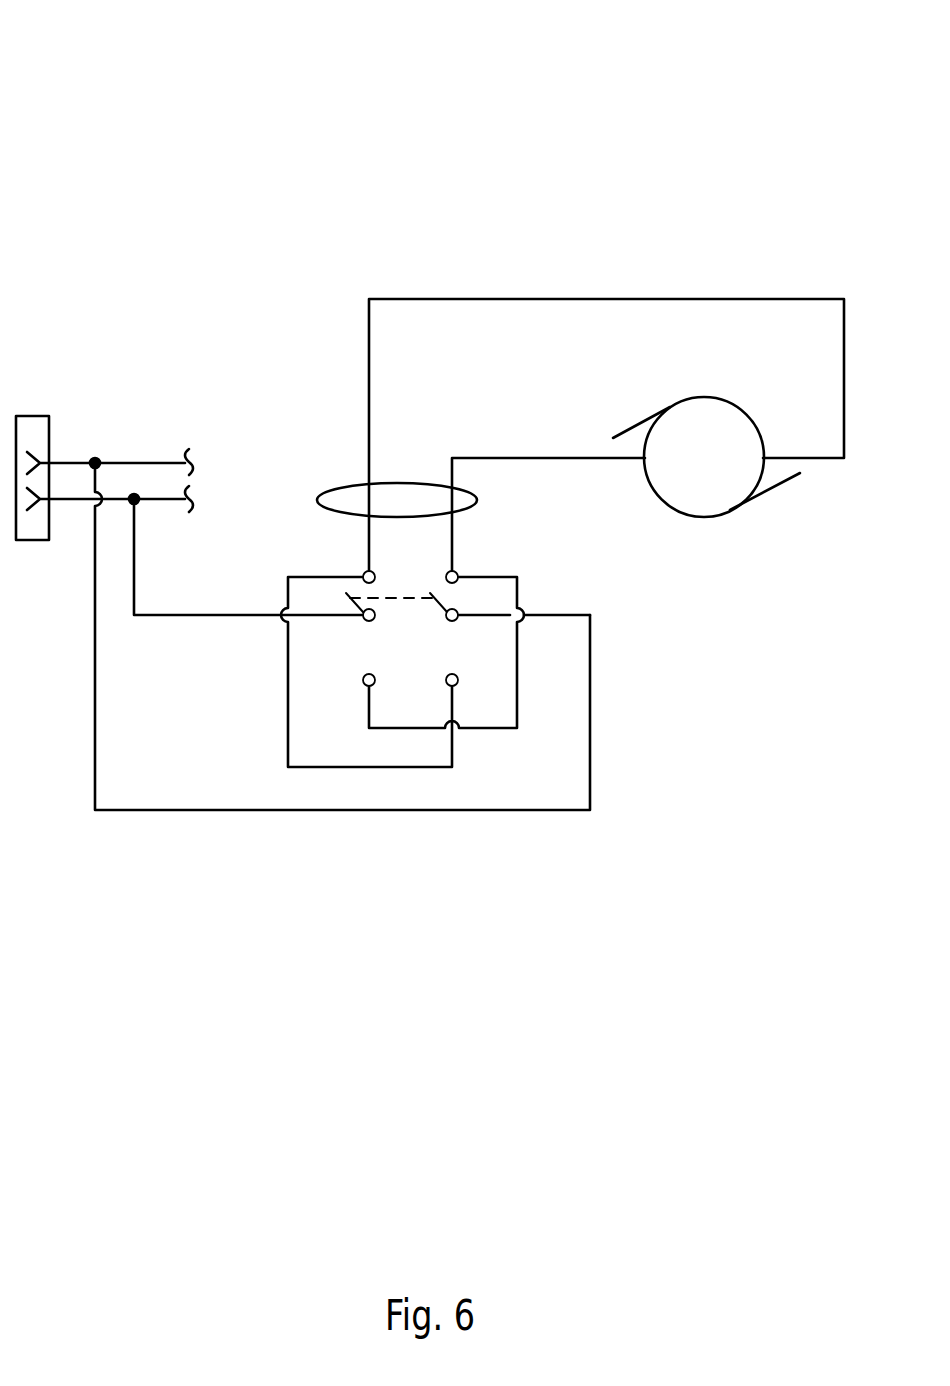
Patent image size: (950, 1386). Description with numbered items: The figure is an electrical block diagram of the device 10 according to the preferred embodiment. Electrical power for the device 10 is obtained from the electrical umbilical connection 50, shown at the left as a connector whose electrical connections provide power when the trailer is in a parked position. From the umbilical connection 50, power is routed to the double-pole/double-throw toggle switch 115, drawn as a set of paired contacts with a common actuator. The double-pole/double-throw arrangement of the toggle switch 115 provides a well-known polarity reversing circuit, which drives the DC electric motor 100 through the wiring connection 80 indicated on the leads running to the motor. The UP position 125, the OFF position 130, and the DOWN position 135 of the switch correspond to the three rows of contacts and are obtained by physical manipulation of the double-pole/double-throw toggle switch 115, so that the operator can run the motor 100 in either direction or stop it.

The device 10 is at (127, 187).
The electrical umbilical connection 50 is at (37, 433).
The wiring connection 80 is at (477, 500).
The DC electric motor 100 is at (725, 513).
The double-pole/double-throw toggle switch 115 is at (453, 599).
The UP position 125 is at (365, 572).
The OFF position 130 is at (363, 616).
The DOWN position 135 is at (365, 698).